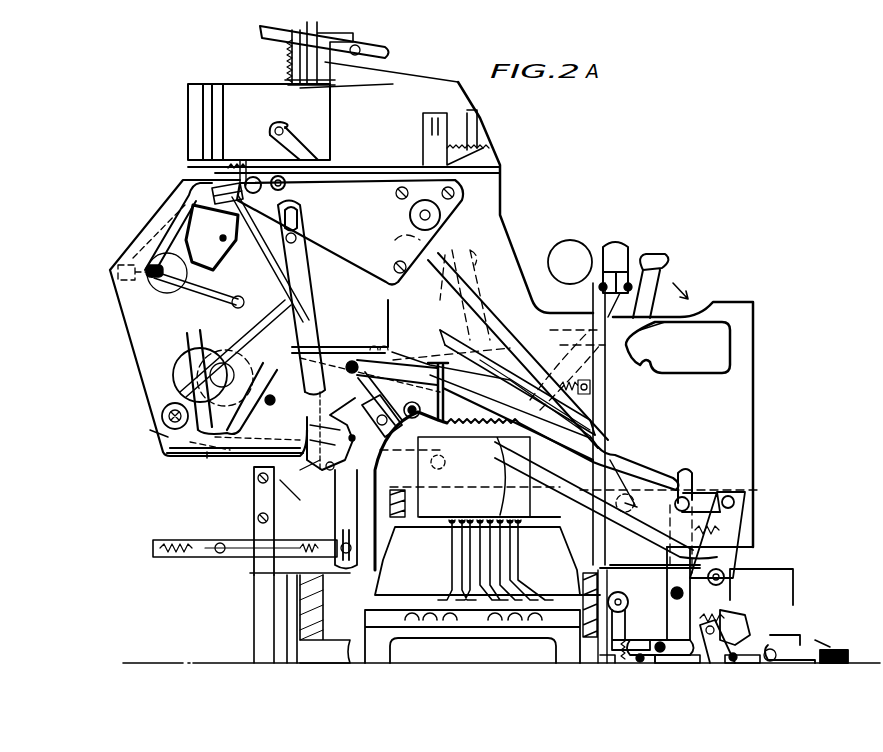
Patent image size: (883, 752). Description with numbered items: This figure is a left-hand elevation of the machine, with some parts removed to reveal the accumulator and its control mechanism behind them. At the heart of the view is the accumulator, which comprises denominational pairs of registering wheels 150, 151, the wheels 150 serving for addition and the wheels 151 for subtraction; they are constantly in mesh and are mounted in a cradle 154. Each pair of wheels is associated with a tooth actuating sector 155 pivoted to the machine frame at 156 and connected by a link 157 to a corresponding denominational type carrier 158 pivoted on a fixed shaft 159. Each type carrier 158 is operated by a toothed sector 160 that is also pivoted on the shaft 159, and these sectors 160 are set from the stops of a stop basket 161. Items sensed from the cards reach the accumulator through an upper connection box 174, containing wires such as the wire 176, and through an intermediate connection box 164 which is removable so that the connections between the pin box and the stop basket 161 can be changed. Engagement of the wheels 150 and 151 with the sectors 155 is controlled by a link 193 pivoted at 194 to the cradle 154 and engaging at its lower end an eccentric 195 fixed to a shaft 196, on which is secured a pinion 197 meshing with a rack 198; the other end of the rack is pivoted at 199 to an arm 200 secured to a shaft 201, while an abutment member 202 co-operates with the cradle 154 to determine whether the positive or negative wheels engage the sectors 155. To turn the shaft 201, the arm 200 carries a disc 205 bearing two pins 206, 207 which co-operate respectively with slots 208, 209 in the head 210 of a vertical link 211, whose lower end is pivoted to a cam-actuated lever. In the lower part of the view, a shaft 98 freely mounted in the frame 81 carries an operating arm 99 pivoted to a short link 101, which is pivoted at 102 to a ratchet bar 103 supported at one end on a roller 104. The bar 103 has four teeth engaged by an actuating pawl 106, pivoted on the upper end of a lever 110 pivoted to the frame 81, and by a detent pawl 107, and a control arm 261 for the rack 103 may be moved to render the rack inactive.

The frame 81 is at (793, 583).
The shaft 98 is at (620, 602).
The operating arm 99 is at (624, 622).
The short link 101 is at (650, 650).
The pivot 102 is at (640, 659).
The ratchet bar 103 is at (680, 650).
The roller 104 is at (735, 660).
The actuating pawl 106 is at (740, 625).
The detent pawl 107 is at (792, 642).
The lever 110 is at (708, 655).
The registering wheels 150 is at (190, 330).
The registering wheels 151 is at (220, 456).
The cradle 154 is at (148, 360).
The tooth actuating sector 155 is at (215, 284).
The pivot 156 is at (362, 224).
The link 157 is at (416, 366).
The type carrier 158 is at (582, 338).
The fixed shaft 159 is at (500, 257).
The toothed sector 160 is at (554, 455).
The stop basket 161 is at (496, 462).
The intermediate connection box 164 is at (385, 648).
The upper connection box 174 is at (440, 561).
The wire 176 is at (528, 575).
The link 193 is at (180, 393).
The pivot 194 is at (180, 348).
The eccentric 195 is at (162, 417).
The shaft 196 is at (155, 434).
The pinion 197 is at (165, 405).
The rack 198 is at (200, 453).
The pivot 199 is at (290, 478).
The arm 200 is at (258, 518).
The shaft 201 is at (258, 478).
The abutment member 202 is at (350, 232).
The disc 205 is at (348, 482).
The pin 206 is at (312, 427).
The pin 207 is at (415, 490).
The slot 208 is at (325, 414).
The slot 209 is at (352, 460).
The head 210 is at (314, 442).
The vertical link 211 is at (280, 643).
The control arm 261 is at (812, 655).